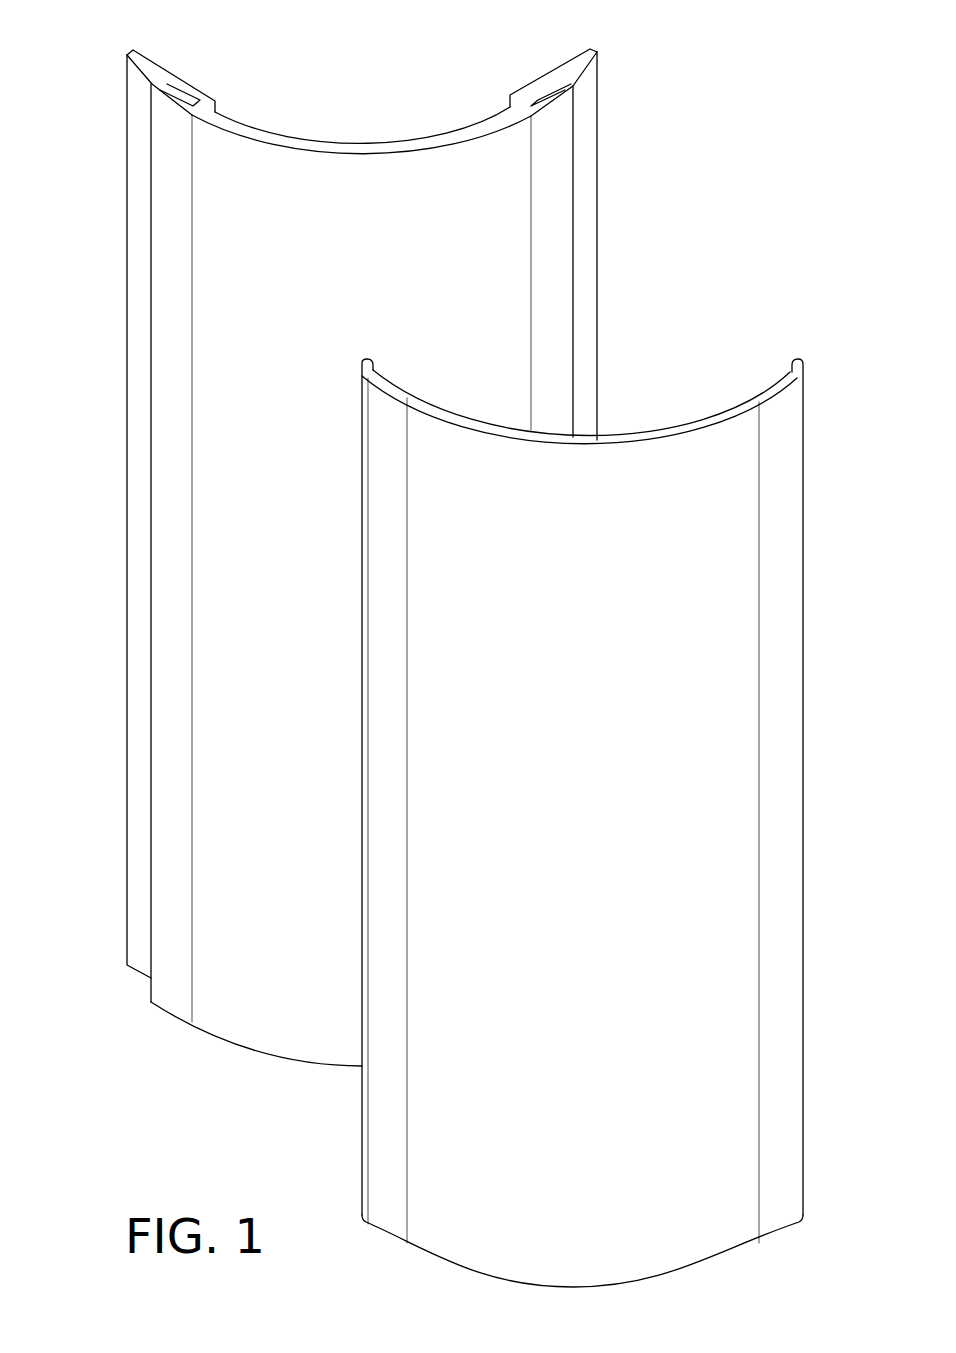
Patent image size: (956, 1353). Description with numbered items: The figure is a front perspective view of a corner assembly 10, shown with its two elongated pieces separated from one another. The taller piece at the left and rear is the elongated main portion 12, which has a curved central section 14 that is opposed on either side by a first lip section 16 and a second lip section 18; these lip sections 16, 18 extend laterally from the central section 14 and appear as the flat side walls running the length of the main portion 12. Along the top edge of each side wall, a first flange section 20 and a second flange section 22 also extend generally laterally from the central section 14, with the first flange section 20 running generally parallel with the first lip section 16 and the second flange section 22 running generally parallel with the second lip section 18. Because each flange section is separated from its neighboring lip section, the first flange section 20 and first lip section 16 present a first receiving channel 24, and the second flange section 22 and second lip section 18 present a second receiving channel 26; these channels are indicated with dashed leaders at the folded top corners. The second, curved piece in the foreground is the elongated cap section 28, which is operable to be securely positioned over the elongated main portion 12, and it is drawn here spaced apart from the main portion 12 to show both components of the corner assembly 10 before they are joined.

The corner assembly 10 is at (431, 643).
The elongated main portion 12 is at (361, 533).
The central section 14 is at (412, 193).
The first lip section 16 is at (172, 125).
The second lip section 18 is at (552, 127).
The first flange section 20 is at (158, 63).
The second flange section 22 is at (567, 62).
The first receiving channel 24 is at (155, 80).
The second receiving channel 26 is at (563, 79).
The elongated cap section 28 is at (667, 472).